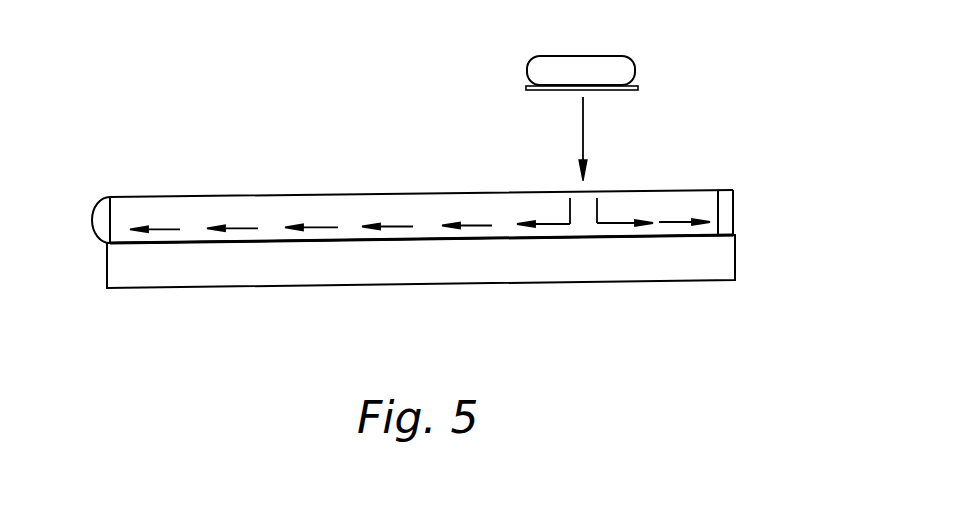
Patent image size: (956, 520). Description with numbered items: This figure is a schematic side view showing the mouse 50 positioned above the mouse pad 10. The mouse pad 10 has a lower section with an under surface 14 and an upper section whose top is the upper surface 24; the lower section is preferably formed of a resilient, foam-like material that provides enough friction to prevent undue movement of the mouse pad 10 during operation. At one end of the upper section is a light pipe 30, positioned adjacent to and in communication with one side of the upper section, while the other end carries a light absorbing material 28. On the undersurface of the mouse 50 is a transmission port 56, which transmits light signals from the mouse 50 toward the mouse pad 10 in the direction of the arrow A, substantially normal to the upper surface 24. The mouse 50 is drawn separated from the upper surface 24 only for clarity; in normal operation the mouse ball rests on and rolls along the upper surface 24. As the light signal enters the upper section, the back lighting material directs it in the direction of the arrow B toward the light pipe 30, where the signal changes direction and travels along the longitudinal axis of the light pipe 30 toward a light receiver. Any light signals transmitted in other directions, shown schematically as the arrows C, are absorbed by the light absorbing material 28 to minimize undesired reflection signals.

The mouse pad 10 is at (250, 152).
The under surface 14 is at (600, 283).
The upper surface 24 is at (436, 191).
The light absorbing material 28 is at (727, 208).
The light pipe 30 is at (92, 222).
The mouse 50 is at (593, 68).
The transmission port 56 is at (577, 90).
The arrow A is at (585, 124).
The arrow B is at (397, 226).
The arrows C is at (678, 221).